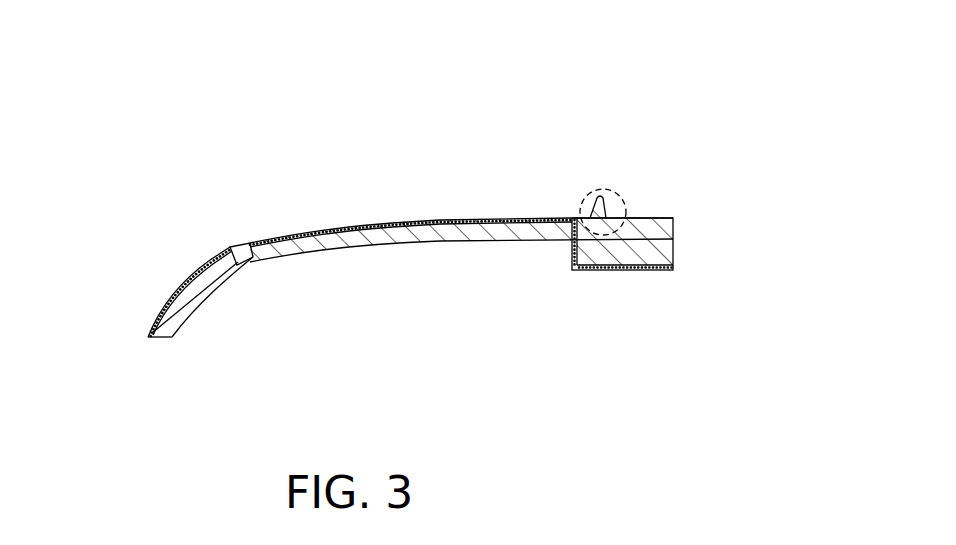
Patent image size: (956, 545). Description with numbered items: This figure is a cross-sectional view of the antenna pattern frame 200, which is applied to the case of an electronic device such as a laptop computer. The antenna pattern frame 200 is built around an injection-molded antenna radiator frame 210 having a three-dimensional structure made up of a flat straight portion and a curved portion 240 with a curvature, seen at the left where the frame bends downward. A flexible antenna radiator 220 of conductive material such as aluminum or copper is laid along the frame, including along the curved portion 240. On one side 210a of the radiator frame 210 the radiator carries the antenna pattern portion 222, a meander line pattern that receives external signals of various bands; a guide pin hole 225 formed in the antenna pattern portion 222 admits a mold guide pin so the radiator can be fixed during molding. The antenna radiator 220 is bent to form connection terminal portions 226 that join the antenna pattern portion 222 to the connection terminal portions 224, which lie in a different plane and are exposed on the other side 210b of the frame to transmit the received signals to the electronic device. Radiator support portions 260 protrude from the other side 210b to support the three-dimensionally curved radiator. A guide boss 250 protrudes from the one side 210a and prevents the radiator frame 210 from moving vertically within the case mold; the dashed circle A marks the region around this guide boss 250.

The antenna pattern frame 200 is at (233, 39).
The antenna radiator frame 210 is at (409, 246).
The one side of radiator frame 210a is at (660, 218).
The other side of radiator frame 210b is at (496, 242).
The antenna radiator 220 is at (167, 303).
The antenna pattern portion 222 is at (507, 220).
The connection terminal portion 224 is at (650, 270).
The guide pin hole 225 is at (240, 245).
The connection terminal portion 226 is at (572, 265).
The curved portion 240 is at (205, 308).
The guide boss 250 is at (598, 197).
The radiator support portion 260 is at (327, 252).
The enlarged region A is at (618, 190).